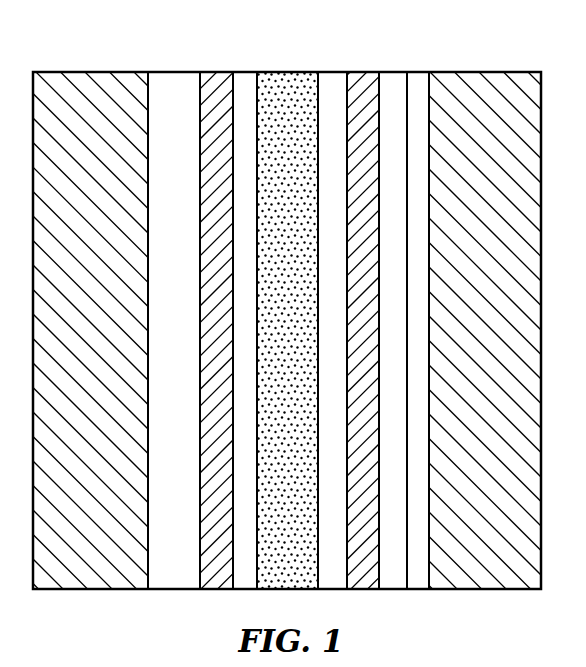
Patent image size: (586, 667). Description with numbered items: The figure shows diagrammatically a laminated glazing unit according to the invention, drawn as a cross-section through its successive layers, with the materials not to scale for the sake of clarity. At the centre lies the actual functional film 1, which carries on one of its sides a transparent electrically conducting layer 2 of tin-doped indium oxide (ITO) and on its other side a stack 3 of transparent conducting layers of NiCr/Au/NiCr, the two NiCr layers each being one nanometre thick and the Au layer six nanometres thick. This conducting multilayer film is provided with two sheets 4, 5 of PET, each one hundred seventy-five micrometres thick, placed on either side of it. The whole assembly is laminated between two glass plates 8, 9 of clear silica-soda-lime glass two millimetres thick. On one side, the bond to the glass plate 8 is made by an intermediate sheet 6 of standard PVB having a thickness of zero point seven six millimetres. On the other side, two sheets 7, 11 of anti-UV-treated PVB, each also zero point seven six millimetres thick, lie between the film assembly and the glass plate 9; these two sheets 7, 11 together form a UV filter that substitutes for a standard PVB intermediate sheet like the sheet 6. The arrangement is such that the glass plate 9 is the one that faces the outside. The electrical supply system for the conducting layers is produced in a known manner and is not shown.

The functional film 1 is at (291, 72).
The transparent electrically conducting layer 2 is at (243, 72).
The stack of transparent conducting layers 3 is at (328, 72).
The sheet of PET 4 is at (215, 72).
The sheet of PET 5 is at (362, 72).
The intermediate sheet of PVB 6 is at (181, 72).
The sheet of anti-UV-treated PVB 7 is at (390, 72).
The glass plate 8 is at (83, 72).
The glass plate 9 is at (481, 72).
The sheet of anti-UV-treated PVB 11 is at (417, 72).